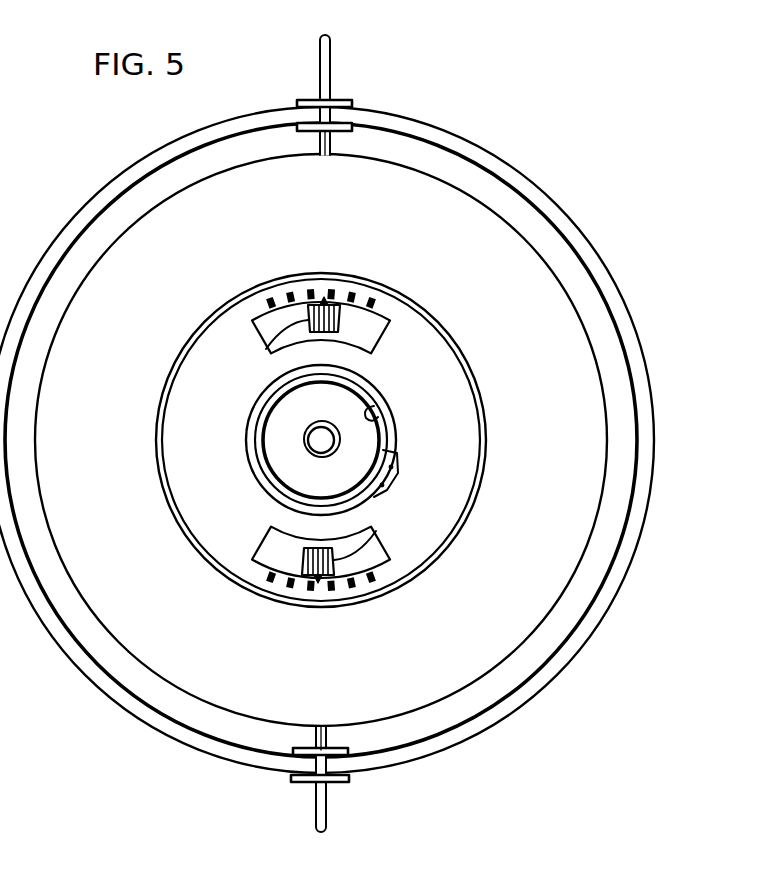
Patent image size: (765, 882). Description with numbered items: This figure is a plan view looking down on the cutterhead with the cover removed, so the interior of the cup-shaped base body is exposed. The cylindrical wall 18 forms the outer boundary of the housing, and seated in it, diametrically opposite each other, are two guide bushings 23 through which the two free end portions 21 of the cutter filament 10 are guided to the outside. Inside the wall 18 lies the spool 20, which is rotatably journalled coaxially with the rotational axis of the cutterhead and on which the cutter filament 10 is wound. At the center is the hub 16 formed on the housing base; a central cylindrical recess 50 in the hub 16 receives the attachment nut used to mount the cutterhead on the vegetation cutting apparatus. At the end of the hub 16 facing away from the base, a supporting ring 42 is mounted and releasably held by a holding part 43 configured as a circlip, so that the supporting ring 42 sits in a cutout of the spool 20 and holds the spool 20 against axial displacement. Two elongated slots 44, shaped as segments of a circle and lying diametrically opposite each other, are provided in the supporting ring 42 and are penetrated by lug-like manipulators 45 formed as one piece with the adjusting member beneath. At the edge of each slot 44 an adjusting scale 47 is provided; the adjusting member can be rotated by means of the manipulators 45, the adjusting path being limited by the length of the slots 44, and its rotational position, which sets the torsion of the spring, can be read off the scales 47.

The cutter filament 10 is at (325, 140).
The hub 16 is at (386, 449).
The cylindrical wall 18 is at (480, 147).
The spool 20 is at (521, 247).
The free end portions 21 is at (320, 52).
The guide bushings 23 is at (344, 100).
The supporting ring 42 is at (462, 398).
The holding part 43 is at (252, 473).
The elongated slots 44 is at (375, 328).
The manipulators 45 is at (266, 349).
The adjusting scale 47 is at (356, 292).
The central cylindrical recess 50 is at (372, 408).